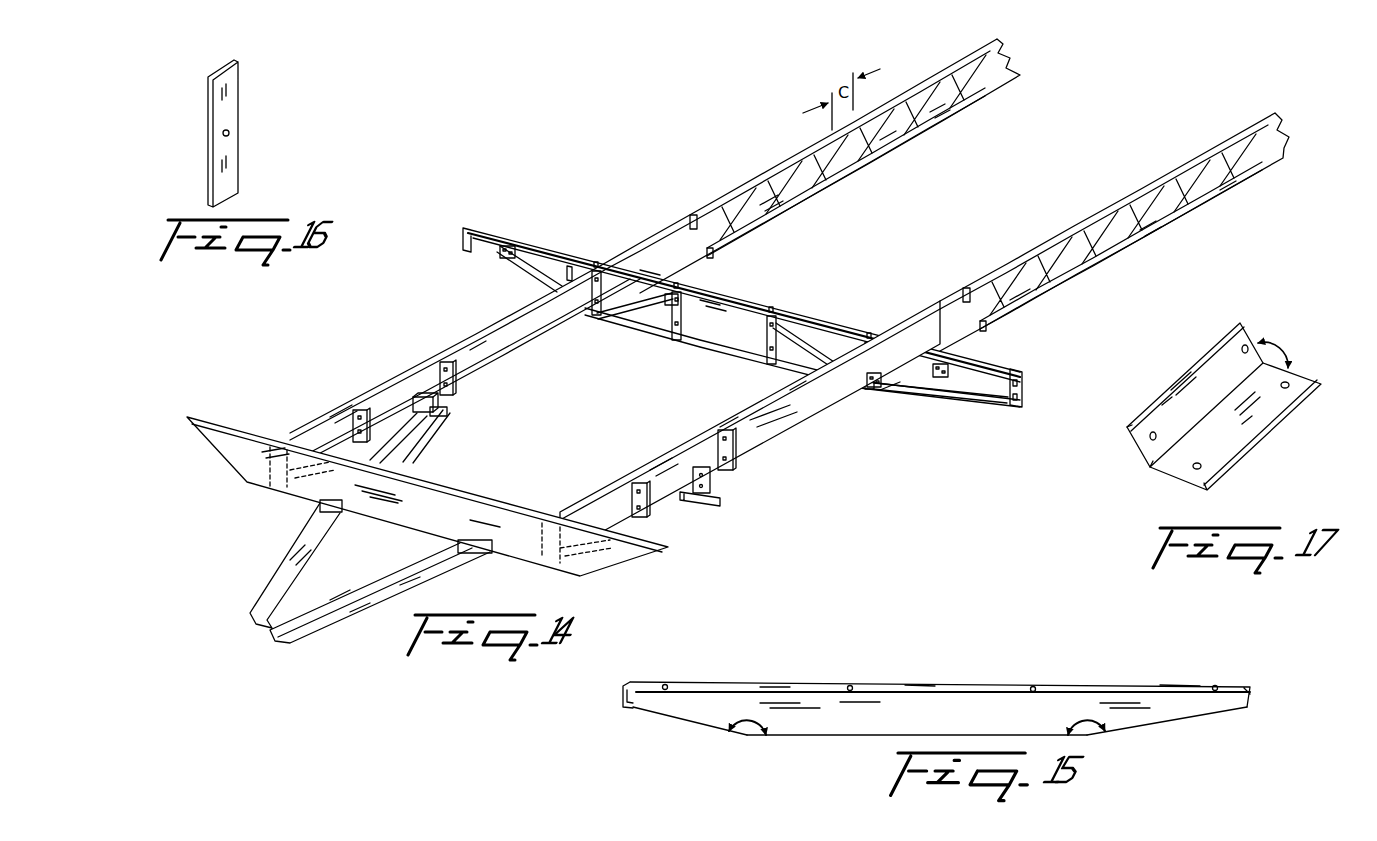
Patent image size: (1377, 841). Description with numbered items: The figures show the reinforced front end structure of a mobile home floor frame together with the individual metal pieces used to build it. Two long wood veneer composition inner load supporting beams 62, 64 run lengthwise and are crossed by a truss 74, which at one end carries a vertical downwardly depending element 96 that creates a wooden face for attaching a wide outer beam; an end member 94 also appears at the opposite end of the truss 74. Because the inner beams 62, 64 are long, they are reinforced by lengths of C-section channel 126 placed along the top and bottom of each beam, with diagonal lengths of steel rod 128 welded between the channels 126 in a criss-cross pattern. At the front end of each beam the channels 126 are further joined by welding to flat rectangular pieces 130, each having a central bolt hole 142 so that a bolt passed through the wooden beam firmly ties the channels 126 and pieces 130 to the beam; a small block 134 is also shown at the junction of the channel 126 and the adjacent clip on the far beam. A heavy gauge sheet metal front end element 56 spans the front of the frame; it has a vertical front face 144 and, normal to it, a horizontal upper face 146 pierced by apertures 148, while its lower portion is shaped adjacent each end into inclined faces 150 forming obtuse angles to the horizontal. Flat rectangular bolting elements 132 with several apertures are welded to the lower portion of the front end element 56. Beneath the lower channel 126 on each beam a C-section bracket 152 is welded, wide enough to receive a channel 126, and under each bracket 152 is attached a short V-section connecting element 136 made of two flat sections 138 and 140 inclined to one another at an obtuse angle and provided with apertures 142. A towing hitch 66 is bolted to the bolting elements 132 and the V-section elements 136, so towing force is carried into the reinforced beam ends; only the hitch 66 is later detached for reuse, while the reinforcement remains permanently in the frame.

In FIG. 14, the front end element 56 is at (247, 473).
In FIG. 15, the front end element 56 is at (1010, 662).
In FIG. 14, the inner load supporting beam 62 is at (827, 400).
In FIG. 14, the inner load supporting beam 64 is at (1007, 73).
In FIG. 14, the towing hitch 66 is at (387, 597).
In FIG. 14, the truss 74 is at (820, 327).
In FIG. 14, the end bracket 94 is at (500, 238).
In FIG. 14, the vertical downwardly depending element 96 is at (1018, 393).
In FIG. 14, the C-section channel 126 is at (935, 74).
In FIG. 14, the steel rod 128 is at (770, 190).
In FIG. 14, the flat rectangular piece 130 is at (463, 377).
In FIG. 16, the flat rectangular piece 130 is at (233, 93).
In FIG. 14, the bolting element 132 is at (447, 410).
In FIG. 14, the spacer block 134 is at (427, 397).
In FIG. 14, the V-section connecting element 136 is at (700, 506).
In FIG. 17, the V-section connecting element 136 is at (1181, 414).
In FIG. 17, the flat section 138 is at (1280, 412).
In FIG. 17, the flat section 140 is at (1203, 373).
In FIG. 16, the bolt hole 142 is at (230, 133).
In FIG. 17, the bolt hole 142 is at (1195, 470).
In FIG. 15, the front face 144 is at (853, 727).
In FIG. 15, the upper face 146 is at (782, 690).
In FIG. 15, the aperture 148 is at (665, 685).
In FIG. 15, the inclined face 150 is at (667, 720).
In FIG. 14, the C-section bracket 152 is at (697, 500).